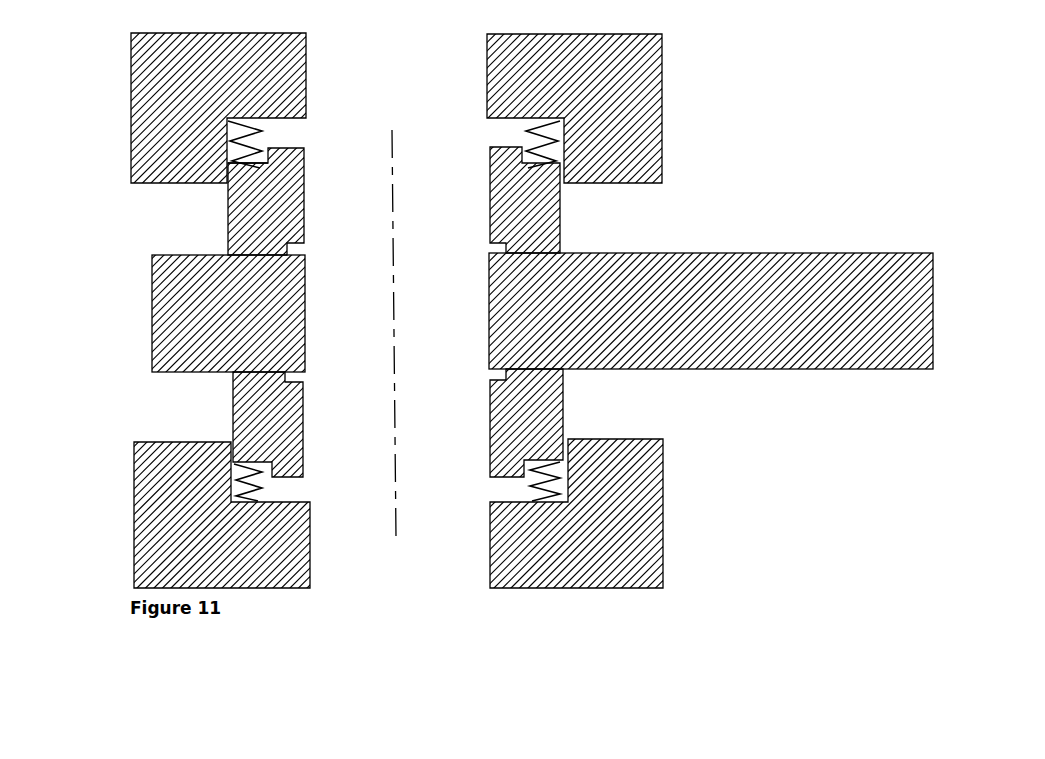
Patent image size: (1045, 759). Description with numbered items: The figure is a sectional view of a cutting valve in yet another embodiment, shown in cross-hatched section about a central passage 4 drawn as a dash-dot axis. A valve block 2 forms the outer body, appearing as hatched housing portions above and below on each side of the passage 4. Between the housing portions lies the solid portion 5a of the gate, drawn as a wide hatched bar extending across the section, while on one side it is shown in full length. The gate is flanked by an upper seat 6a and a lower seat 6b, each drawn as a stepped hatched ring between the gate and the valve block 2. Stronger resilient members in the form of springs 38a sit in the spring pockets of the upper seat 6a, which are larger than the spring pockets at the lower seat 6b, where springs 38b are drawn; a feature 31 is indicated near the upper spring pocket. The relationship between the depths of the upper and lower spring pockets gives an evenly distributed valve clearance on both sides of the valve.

The valve block 2 is at (147, 80).
The solid portion 5a is at (148, 345).
The upper seat 6a is at (230, 231).
The lower seat 6b is at (232, 418).
The springs 38a is at (260, 146).
The lower spring 38b is at (250, 485).
The spring seat 31 is at (232, 175).
The passage 4 is at (415, 572).